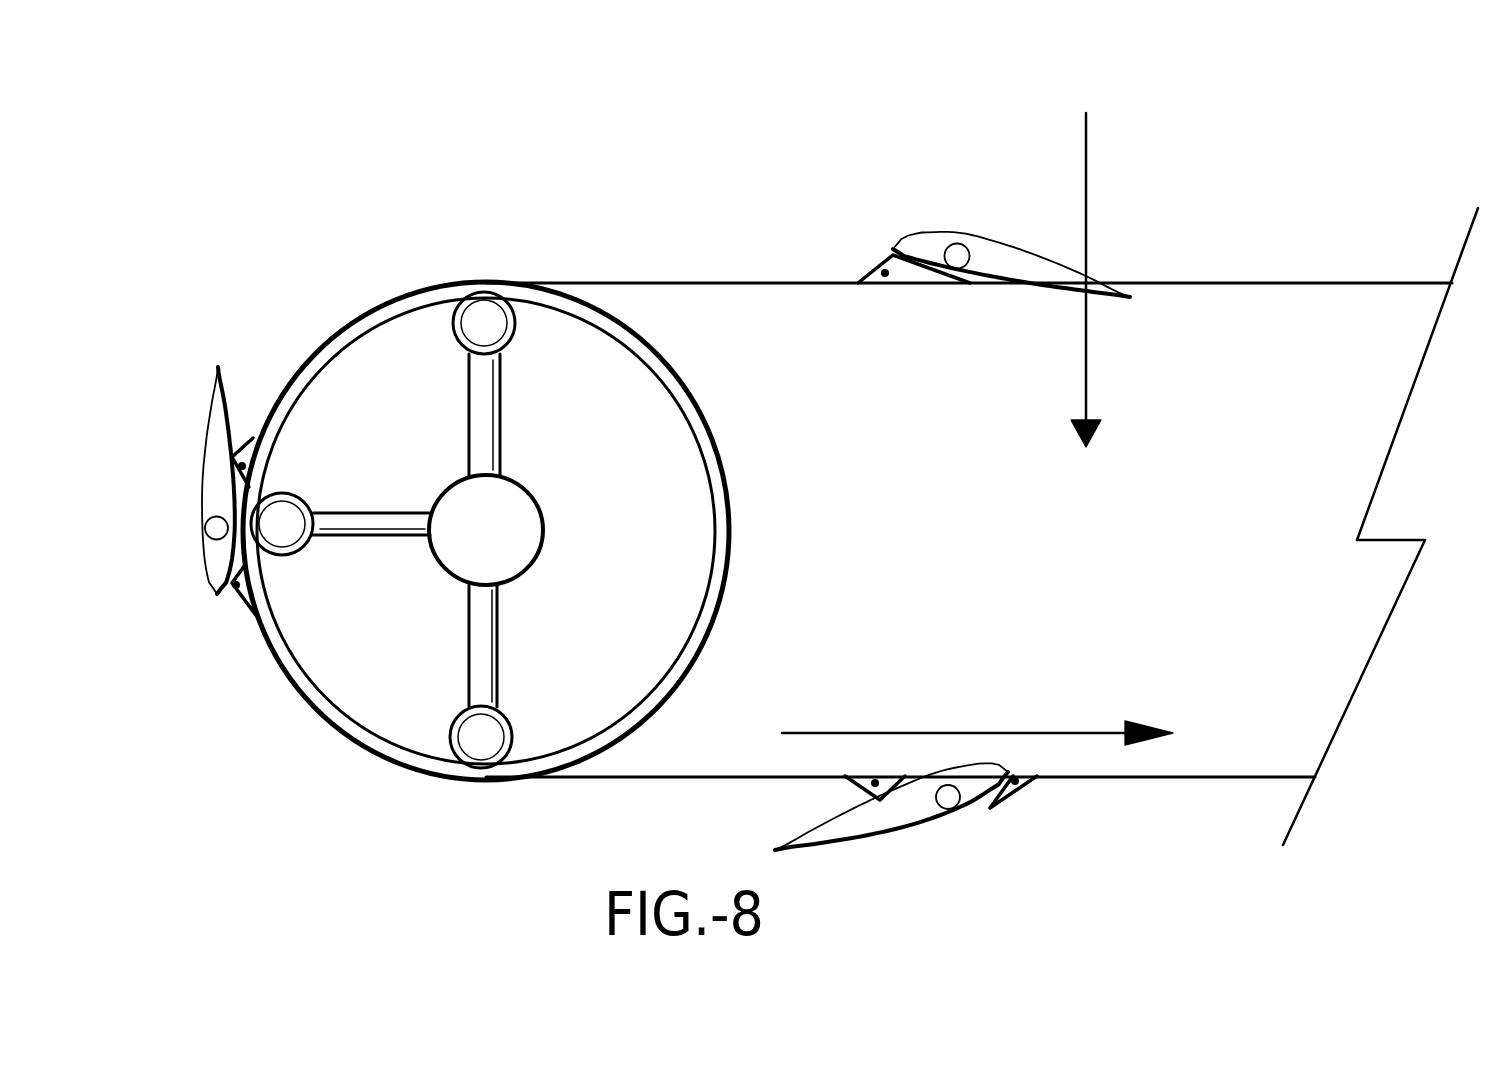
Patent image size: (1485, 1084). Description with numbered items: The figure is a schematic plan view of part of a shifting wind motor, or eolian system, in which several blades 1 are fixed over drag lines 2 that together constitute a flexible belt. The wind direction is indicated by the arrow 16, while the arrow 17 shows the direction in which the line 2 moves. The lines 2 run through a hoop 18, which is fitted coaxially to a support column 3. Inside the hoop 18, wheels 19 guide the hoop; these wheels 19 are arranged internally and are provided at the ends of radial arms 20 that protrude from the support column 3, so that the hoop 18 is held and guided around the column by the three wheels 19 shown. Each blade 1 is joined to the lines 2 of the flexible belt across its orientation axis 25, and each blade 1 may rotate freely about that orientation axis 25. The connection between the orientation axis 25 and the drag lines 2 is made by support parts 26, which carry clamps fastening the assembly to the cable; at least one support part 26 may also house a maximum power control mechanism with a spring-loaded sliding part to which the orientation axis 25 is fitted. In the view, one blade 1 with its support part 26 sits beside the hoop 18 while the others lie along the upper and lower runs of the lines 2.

The blade 1 is at (1015, 267).
The drag line 2 is at (1272, 282).
The support column 3 is at (470, 517).
The arrow 16 is at (1086, 193).
The arrow 17 is at (1078, 735).
The hoop 18 is at (722, 484).
The wheel 19 is at (484, 323).
The radial arm 20 is at (500, 427).
The orientation axis 25 is at (957, 255).
The support part 26 is at (880, 260).